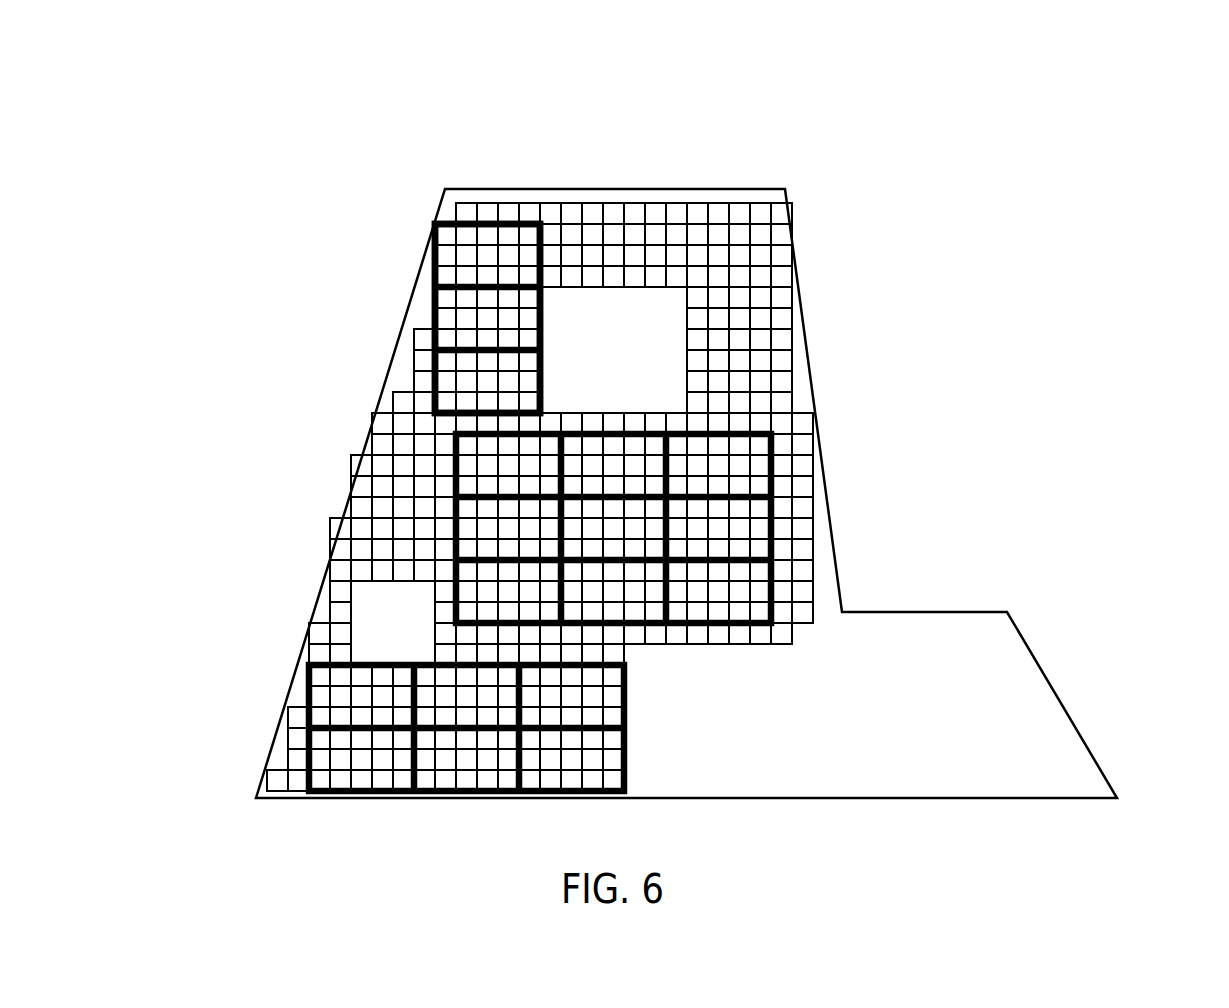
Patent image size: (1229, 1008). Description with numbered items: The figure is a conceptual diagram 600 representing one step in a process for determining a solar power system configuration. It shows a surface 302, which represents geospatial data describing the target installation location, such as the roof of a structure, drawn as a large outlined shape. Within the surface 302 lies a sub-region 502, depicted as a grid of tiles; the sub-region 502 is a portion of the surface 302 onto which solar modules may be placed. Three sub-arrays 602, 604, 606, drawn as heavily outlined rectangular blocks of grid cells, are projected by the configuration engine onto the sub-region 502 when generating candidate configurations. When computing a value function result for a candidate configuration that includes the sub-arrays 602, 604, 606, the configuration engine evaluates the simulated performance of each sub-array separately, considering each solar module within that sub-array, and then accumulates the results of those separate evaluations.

The conceptual diagram 600 is at (1102, 80).
The surface 302 is at (437, 212).
The sub-region 502 is at (428, 277).
The sub-array 602 is at (465, 317).
The sub-array 604 is at (492, 470).
The sub-array 606 is at (343, 700).